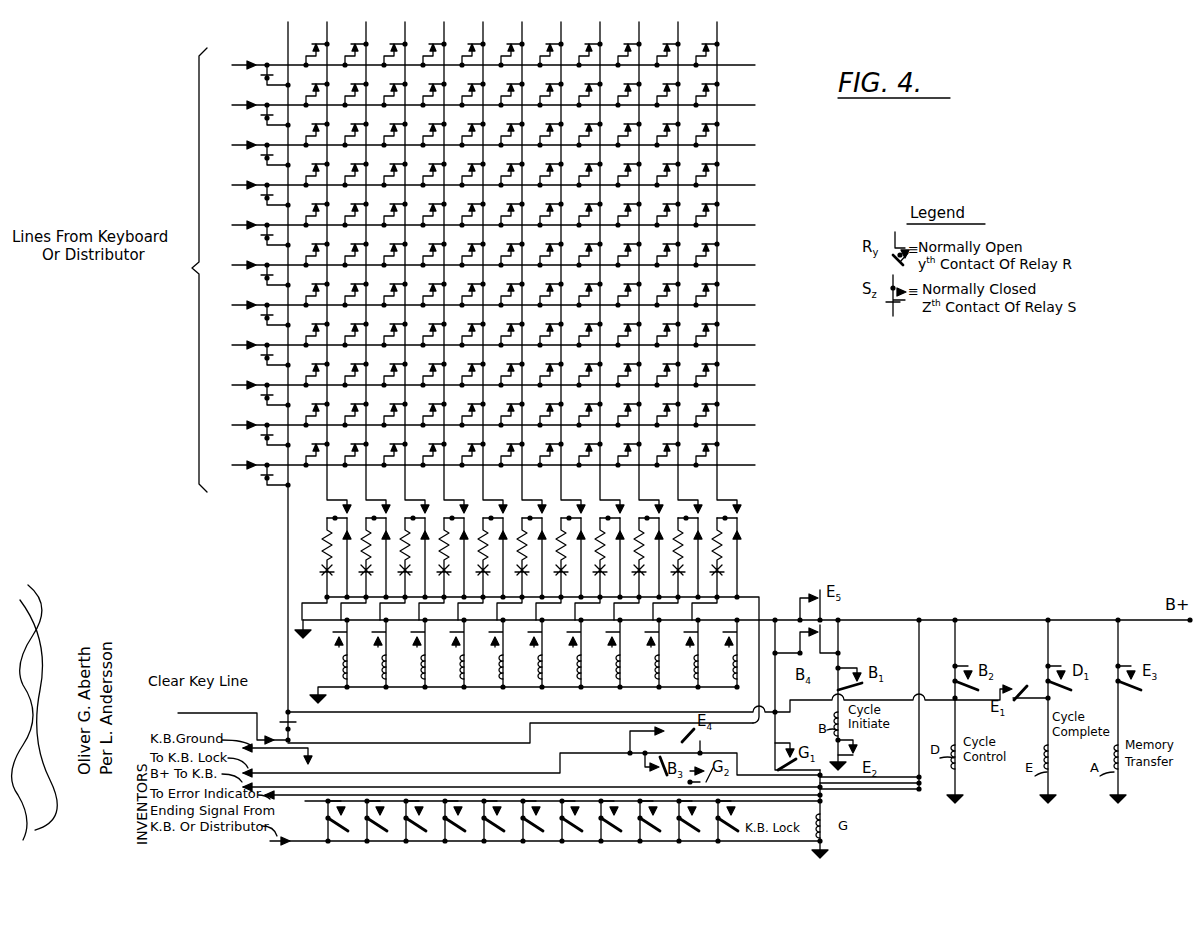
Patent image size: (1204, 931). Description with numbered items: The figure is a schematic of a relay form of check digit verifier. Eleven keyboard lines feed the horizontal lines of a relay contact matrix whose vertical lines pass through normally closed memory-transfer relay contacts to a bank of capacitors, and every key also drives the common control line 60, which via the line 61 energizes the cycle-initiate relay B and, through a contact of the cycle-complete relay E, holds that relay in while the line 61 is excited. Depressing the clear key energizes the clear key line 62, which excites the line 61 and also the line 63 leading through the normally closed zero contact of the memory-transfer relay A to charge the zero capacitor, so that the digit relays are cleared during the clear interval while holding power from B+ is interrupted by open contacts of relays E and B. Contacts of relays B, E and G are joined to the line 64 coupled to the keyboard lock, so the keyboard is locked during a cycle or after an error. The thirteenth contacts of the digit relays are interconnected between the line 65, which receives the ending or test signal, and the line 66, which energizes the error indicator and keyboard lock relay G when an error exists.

The common control line 60 is at (288, 556).
The line 61 is at (486, 710).
The clear key line 62 is at (246, 705).
The line 63 is at (481, 741).
The line 64 is at (486, 772).
The line 65 is at (318, 838).
The line 66 is at (308, 800).